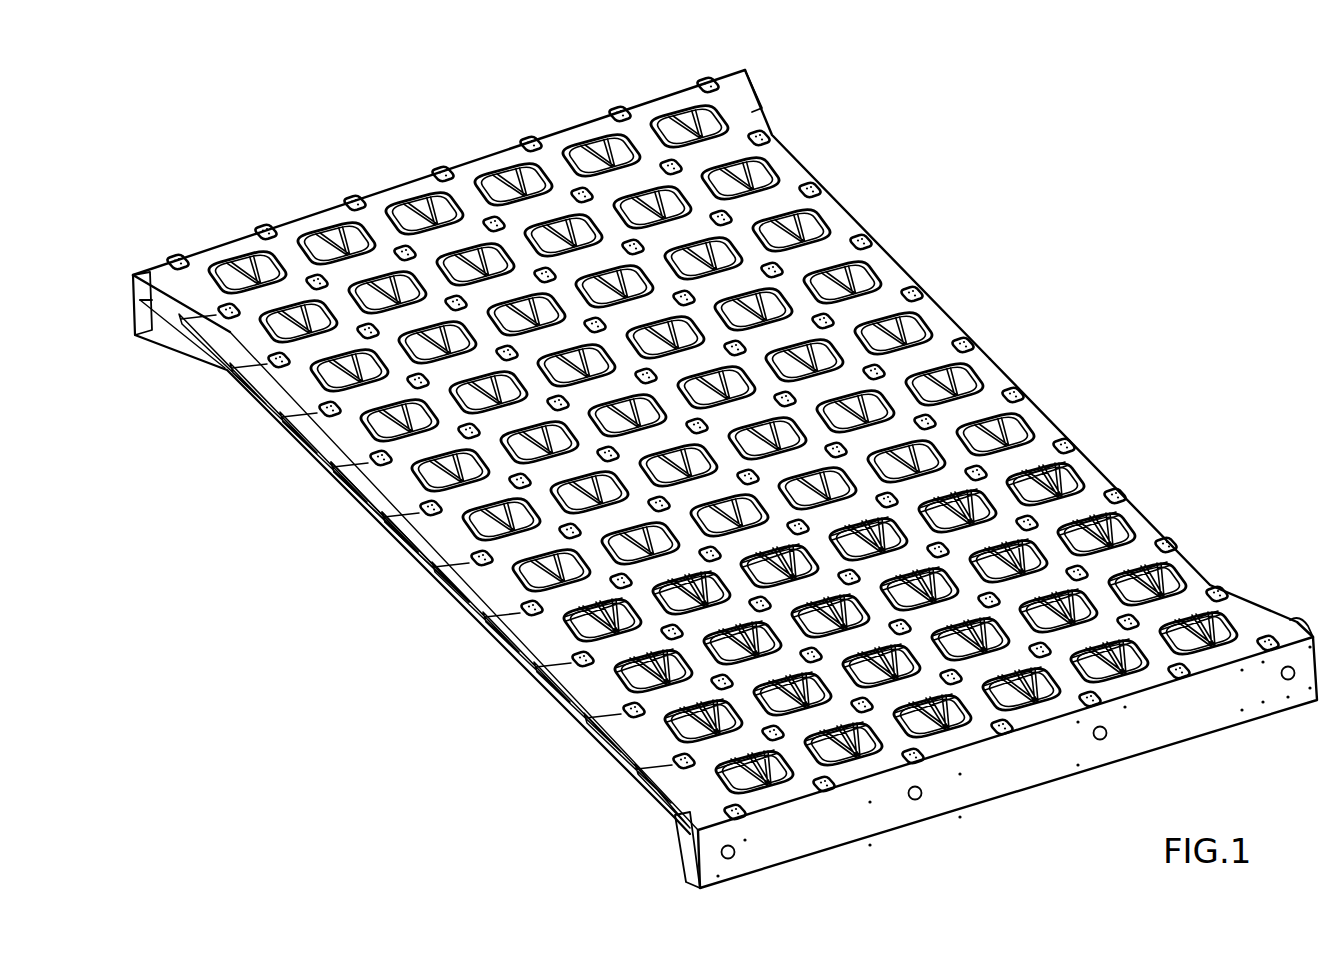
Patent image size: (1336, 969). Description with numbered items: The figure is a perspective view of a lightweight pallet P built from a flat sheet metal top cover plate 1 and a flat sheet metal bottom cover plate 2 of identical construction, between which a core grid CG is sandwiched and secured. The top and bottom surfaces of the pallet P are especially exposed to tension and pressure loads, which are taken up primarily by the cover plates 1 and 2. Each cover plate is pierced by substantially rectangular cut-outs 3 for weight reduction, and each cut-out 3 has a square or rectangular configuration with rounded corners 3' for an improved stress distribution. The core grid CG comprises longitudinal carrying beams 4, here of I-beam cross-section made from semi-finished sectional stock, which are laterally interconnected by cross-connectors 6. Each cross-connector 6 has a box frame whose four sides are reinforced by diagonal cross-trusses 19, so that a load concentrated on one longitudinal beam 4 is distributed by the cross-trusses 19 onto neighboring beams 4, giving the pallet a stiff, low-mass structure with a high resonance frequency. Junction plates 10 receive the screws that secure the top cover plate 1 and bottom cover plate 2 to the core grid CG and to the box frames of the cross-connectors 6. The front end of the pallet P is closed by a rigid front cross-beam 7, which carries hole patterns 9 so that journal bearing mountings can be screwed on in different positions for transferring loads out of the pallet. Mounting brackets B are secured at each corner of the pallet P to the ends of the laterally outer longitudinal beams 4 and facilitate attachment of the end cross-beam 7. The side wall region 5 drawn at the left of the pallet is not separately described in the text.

The top cover plate 1 is at (885, 266).
The bottom cover plate 2 is at (885, 360).
The cut-outs 3 is at (416, 191).
The rounded corners 3' is at (418, 564).
The longitudinal carrying beams 4 is at (1020, 430).
The side truss wall 5 is at (487, 632).
The cross-connectors 6 is at (945, 730).
The front cross-beam 7 is at (1197, 720).
The hole patterns 9 is at (1123, 745).
The junction plates 10 is at (1070, 440).
The diagonal cross-truss 19 is at (1193, 610).
The mounting brackets B is at (178, 345).
The pallet P is at (830, 138).
The core grid CG is at (360, 556).